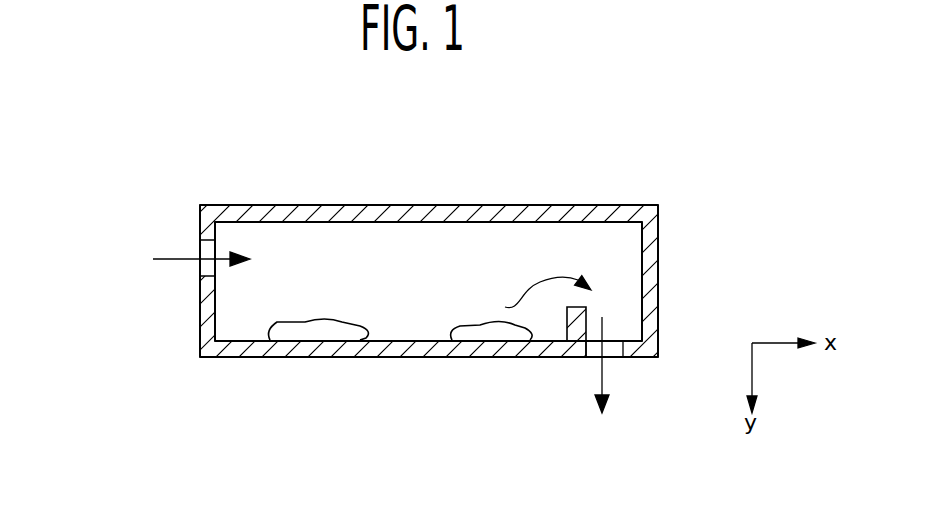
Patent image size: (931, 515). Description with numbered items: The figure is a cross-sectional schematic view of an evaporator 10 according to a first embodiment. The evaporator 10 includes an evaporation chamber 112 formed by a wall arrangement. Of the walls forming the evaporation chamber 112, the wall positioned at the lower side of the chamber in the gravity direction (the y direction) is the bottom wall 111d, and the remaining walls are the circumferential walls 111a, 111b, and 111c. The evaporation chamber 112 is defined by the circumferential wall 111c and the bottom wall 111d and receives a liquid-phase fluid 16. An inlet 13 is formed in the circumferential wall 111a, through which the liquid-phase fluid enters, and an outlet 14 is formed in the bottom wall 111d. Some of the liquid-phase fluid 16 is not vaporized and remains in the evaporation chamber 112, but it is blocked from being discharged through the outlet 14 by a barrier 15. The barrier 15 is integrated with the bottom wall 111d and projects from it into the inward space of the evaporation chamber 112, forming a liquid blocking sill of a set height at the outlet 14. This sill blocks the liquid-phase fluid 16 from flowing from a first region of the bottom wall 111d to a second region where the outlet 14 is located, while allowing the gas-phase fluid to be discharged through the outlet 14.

The evaporator 10 is at (276, 161).
The inlet 13 is at (210, 248).
The outlet 14 is at (615, 348).
The barrier 15 is at (567, 318).
The liquid-phase fluid 16 is at (315, 332).
The circumferential wall 111a is at (208, 330).
The circumferential wall 111b is at (652, 273).
The circumferential wall 111c is at (578, 218).
The bottom wall 111d is at (412, 348).
The evaporation chamber 112 is at (436, 245).